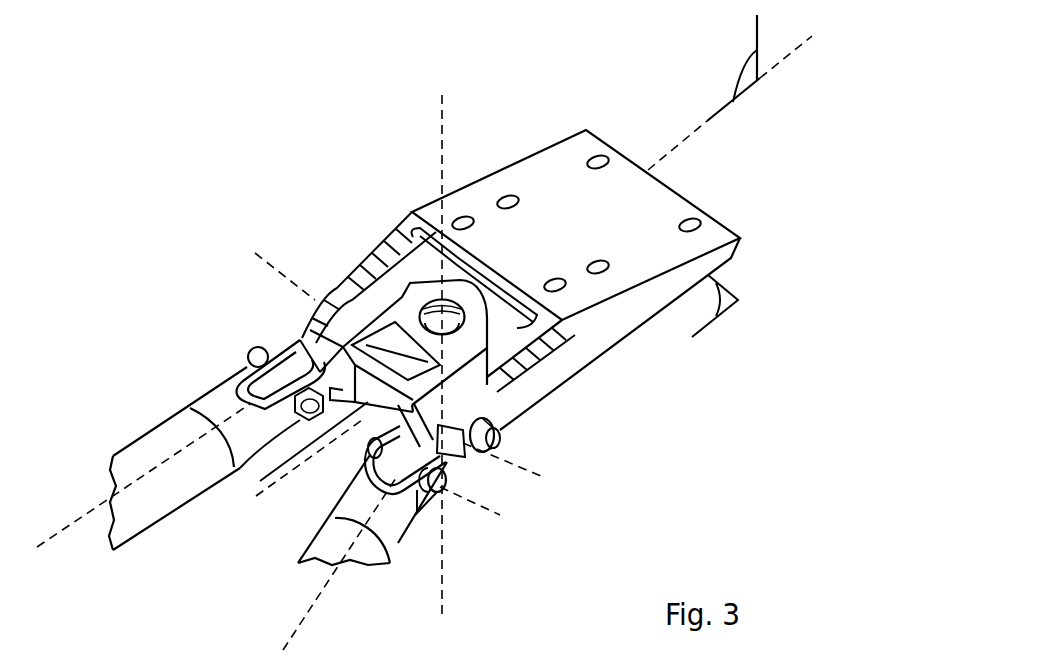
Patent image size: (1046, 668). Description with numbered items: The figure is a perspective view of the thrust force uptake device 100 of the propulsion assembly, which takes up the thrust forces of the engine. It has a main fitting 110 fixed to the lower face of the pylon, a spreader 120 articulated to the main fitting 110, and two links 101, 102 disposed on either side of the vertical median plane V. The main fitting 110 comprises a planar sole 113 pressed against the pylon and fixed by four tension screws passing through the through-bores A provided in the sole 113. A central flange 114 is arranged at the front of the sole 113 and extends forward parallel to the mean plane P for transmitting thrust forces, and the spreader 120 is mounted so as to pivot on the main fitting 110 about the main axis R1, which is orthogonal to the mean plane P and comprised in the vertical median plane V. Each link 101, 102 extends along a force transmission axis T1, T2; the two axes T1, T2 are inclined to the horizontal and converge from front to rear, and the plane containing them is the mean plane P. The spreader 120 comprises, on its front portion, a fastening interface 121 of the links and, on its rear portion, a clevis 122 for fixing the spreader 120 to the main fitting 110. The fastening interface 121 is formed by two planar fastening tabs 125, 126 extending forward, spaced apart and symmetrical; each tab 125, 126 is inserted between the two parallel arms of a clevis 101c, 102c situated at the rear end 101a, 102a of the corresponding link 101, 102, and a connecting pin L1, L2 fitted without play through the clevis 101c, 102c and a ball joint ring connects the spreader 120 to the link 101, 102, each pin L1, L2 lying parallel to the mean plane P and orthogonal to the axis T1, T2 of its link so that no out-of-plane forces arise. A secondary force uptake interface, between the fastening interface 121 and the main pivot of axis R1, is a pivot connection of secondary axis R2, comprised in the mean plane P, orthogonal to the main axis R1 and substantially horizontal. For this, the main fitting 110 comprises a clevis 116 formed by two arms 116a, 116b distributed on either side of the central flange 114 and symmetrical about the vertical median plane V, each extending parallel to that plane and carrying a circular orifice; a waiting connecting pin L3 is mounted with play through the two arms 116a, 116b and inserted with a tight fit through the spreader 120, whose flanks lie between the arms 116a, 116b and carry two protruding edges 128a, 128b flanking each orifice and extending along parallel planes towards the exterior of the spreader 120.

The thrust force uptake device 100 is at (800, 260).
The first link 101 is at (133, 452).
The rear end of first link 101a is at (227, 362).
The clevis of first link 101c is at (268, 342).
The second link 102 is at (395, 542).
The rear end of second link 102a is at (363, 455).
The clevis of second link 102c is at (431, 508).
The main fitting 110 is at (497, 170).
The planar sole 113 is at (552, 170).
The central flange 114 is at (500, 327).
The clevis of main fitting 116 is at (360, 255).
The first clevis arm 116a is at (377, 252).
The second clevis arm 116b is at (560, 363).
The spreader 120 is at (330, 292).
The fastening interface of the links 121 is at (362, 428).
The clevis of spreader 122 is at (418, 297).
The first fastening tab 125 is at (293, 340).
The second fastening tab 126 is at (424, 447).
The first protruding edge 128a is at (470, 462).
The second protruding edge 128b is at (338, 302).
The through-bores A is at (692, 220).
The vertical median plane V is at (740, 63).
The reference axis X is at (797, 48).
The mean plane for transmitting thrust forces P is at (716, 305).
The main axis R1 is at (426, 335).
The secondary axis R2 is at (540, 474).
The force transmission axis of first link T1 is at (42, 541).
The force transmission axis of second link T2 is at (292, 636).
The first connecting pin L1 is at (299, 458).
The second connecting pin L2 is at (277, 408).
The waiting connecting pin L3 is at (505, 465).